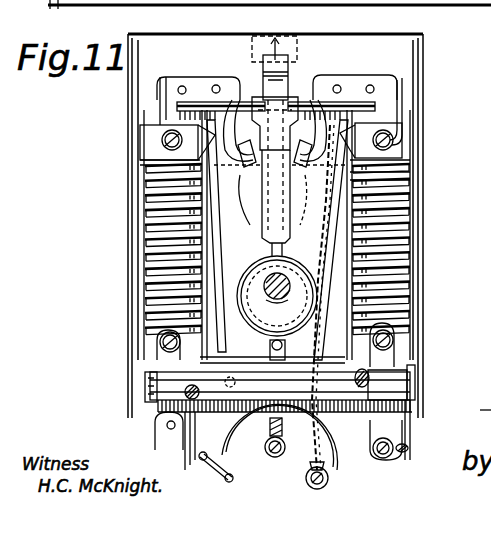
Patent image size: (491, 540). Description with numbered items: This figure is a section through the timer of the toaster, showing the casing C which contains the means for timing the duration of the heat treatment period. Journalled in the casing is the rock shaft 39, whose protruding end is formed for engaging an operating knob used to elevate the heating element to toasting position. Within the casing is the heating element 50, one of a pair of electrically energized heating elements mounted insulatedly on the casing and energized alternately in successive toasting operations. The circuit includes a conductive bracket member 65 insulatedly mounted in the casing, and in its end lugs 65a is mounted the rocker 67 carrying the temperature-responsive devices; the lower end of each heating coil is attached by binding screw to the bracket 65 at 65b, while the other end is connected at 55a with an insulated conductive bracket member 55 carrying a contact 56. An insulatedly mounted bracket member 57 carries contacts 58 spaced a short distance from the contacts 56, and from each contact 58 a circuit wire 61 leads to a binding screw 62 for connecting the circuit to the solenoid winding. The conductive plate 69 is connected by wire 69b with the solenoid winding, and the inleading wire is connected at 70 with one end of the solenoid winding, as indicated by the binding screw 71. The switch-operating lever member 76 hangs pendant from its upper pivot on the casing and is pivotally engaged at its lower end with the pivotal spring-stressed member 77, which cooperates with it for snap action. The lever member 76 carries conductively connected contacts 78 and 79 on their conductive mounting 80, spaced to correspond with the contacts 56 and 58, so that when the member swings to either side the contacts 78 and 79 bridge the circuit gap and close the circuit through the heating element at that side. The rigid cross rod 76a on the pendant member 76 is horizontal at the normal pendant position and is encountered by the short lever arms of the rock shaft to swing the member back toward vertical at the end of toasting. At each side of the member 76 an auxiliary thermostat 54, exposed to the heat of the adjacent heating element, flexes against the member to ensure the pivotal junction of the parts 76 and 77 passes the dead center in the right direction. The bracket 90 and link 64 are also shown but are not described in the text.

The rock shaft 39 is at (277, 303).
The heating element 50 is at (143, 165).
The auxiliary thermostat 54 is at (225, 340).
The conductive bracket member 55 is at (188, 77).
The heating coil connection 55a is at (160, 137).
The contact 56 is at (207, 130).
The bracket member 57 is at (277, 240).
The contacts 58 is at (200, 192).
The circuit wire 61 is at (147, 223).
The binding screw 62 is at (355, 177).
The link 64 is at (215, 458).
The conductive bracket member 65 is at (395, 375).
The end lugs 65a is at (148, 375).
The binding screw attachment 65b is at (157, 342).
The rocker 67 is at (261, 437).
The conductive plate 69 is at (342, 467).
The wire 69b is at (405, 415).
The inleading wire connection 70 is at (282, 487).
The binding screw 71 is at (259, 443).
The switch-operating lever member 76 is at (288, 70).
The cross rod 76a is at (288, 47).
The spring-stressed member 77 is at (237, 295).
The contact 78 is at (248, 87).
The contact 79 is at (306, 244).
The conductive mounting 80 is at (258, 173).
The bracket 90 is at (160, 440).
The casing C is at (425, 244).